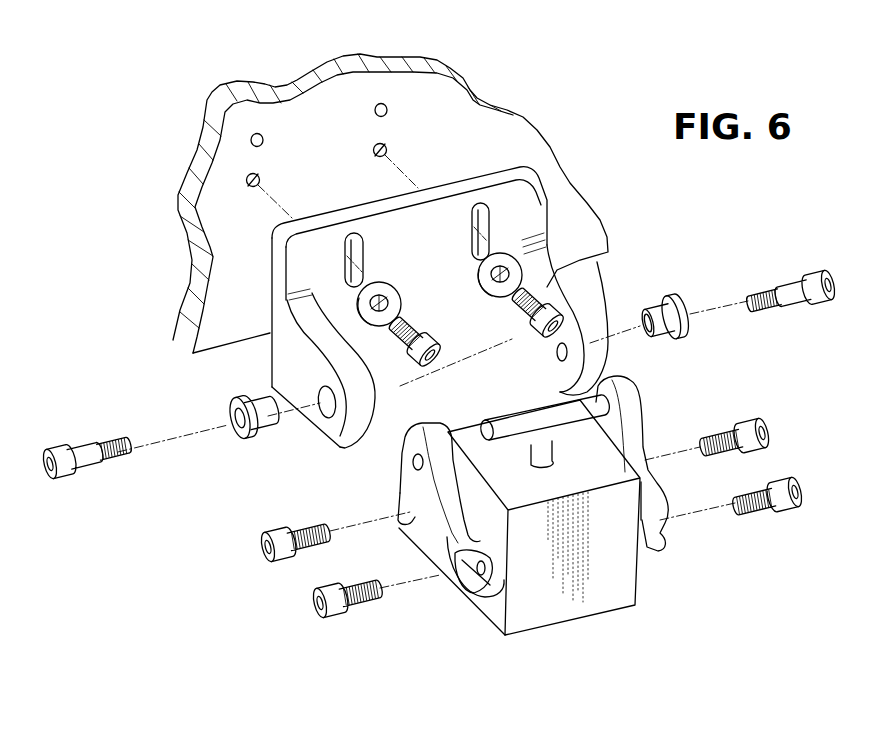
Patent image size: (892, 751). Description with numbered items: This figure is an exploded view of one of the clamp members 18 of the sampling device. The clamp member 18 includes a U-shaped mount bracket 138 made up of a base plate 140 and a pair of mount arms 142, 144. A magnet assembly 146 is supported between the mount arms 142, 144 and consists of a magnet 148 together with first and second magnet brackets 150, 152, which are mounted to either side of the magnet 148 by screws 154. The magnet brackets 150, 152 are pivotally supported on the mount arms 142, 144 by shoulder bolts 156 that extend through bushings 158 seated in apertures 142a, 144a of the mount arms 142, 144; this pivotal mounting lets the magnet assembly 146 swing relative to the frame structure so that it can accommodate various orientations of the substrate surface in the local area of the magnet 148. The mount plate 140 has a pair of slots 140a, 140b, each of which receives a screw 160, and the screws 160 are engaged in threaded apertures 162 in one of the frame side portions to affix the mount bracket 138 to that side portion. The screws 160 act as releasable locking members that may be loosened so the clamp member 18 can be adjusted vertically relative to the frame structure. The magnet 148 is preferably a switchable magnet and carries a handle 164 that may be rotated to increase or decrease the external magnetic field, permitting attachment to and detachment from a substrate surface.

The clamp member 18 is at (518, 161).
The U-shaped mount bracket 138 is at (274, 234).
The base plate 140 is at (465, 186).
The slot 140a is at (346, 257).
The slot 140b is at (478, 236).
The mount arm 142 is at (300, 418).
The aperture 142a is at (325, 418).
The mount arm 144 is at (598, 328).
The aperture 144a is at (608, 366).
The magnet assembly 146 is at (648, 596).
The magnet 148 is at (610, 598).
The first magnet bracket 150 is at (497, 580).
The second magnet bracket 152 is at (645, 545).
The screws 154 is at (313, 595).
The shoulder bolts 156 is at (65, 483).
The bushings 158 is at (256, 401).
The screws 160 is at (541, 326).
The threaded apertures 162 is at (374, 147).
The handle 164 is at (498, 424).